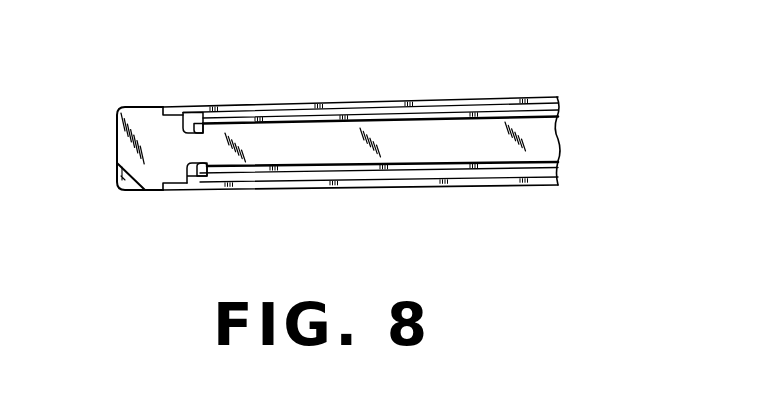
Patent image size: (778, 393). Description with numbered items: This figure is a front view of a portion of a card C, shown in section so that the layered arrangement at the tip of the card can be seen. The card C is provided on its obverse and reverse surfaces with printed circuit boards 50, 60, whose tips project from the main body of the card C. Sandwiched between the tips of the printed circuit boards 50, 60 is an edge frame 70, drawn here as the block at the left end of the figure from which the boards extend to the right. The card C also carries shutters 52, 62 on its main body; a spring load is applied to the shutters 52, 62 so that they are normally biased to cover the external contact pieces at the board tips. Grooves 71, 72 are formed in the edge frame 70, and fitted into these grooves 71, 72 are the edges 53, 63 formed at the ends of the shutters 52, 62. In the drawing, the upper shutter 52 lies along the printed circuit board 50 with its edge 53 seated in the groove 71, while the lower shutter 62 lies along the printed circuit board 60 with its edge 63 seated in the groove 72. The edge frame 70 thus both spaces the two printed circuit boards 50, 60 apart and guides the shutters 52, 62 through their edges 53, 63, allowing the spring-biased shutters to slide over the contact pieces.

The card C is at (126, 92).
The printed circuit board 50 is at (458, 117).
The shutter 52 is at (353, 110).
The edge 53 is at (183, 115).
The printed circuit board 60 is at (457, 168).
The shutter 62 is at (350, 178).
The edge 63 is at (185, 175).
The edge frame 70 is at (278, 152).
The groove 71 is at (197, 125).
The groove 72 is at (200, 176).